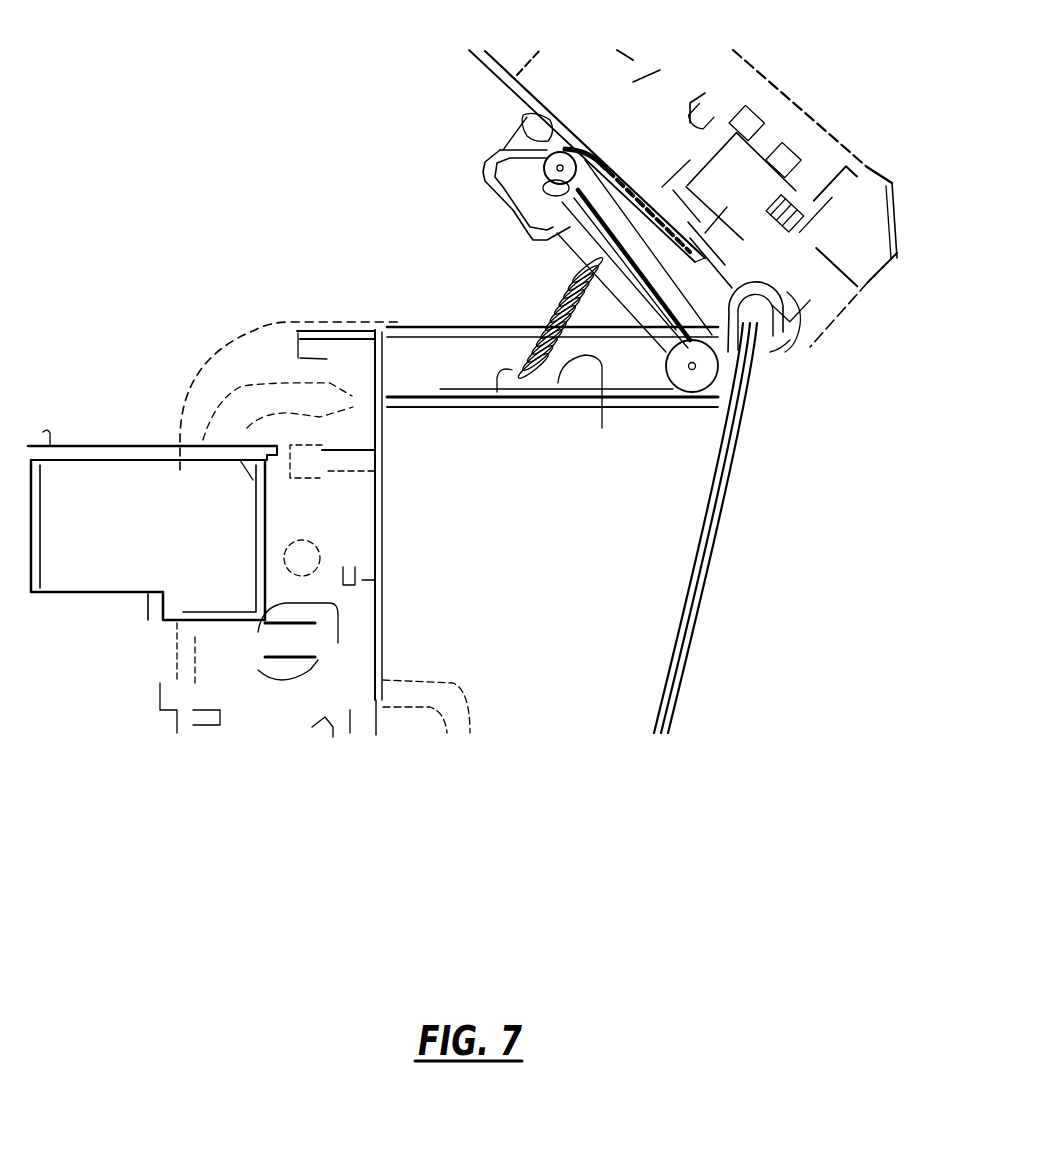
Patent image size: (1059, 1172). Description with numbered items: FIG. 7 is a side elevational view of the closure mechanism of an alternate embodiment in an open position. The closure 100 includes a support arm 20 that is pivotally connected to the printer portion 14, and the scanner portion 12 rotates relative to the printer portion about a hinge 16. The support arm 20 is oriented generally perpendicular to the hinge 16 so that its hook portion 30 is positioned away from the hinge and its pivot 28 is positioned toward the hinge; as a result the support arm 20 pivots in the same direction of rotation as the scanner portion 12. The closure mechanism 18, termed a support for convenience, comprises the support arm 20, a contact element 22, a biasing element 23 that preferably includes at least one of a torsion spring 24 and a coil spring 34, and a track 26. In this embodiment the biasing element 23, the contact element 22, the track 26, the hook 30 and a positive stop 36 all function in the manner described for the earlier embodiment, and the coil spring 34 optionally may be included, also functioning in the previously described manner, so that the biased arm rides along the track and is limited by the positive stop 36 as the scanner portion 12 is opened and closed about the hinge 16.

The closure 100 is at (194, 136).
The scanner portion 12 is at (770, 73).
The printer portion 14 is at (232, 350).
The hinge 16 is at (763, 345).
The closure mechanism 18 is at (399, 270).
The support arm 20 is at (507, 230).
The contact element 22 is at (495, 150).
The biasing element 23 is at (528, 431).
The torsion spring 24 is at (512, 382).
The track 26 is at (524, 116).
The pivot 28 is at (688, 372).
The hook portion 30 is at (553, 222).
The coil spring 34 is at (592, 365).
The positive stop 36 is at (632, 162).